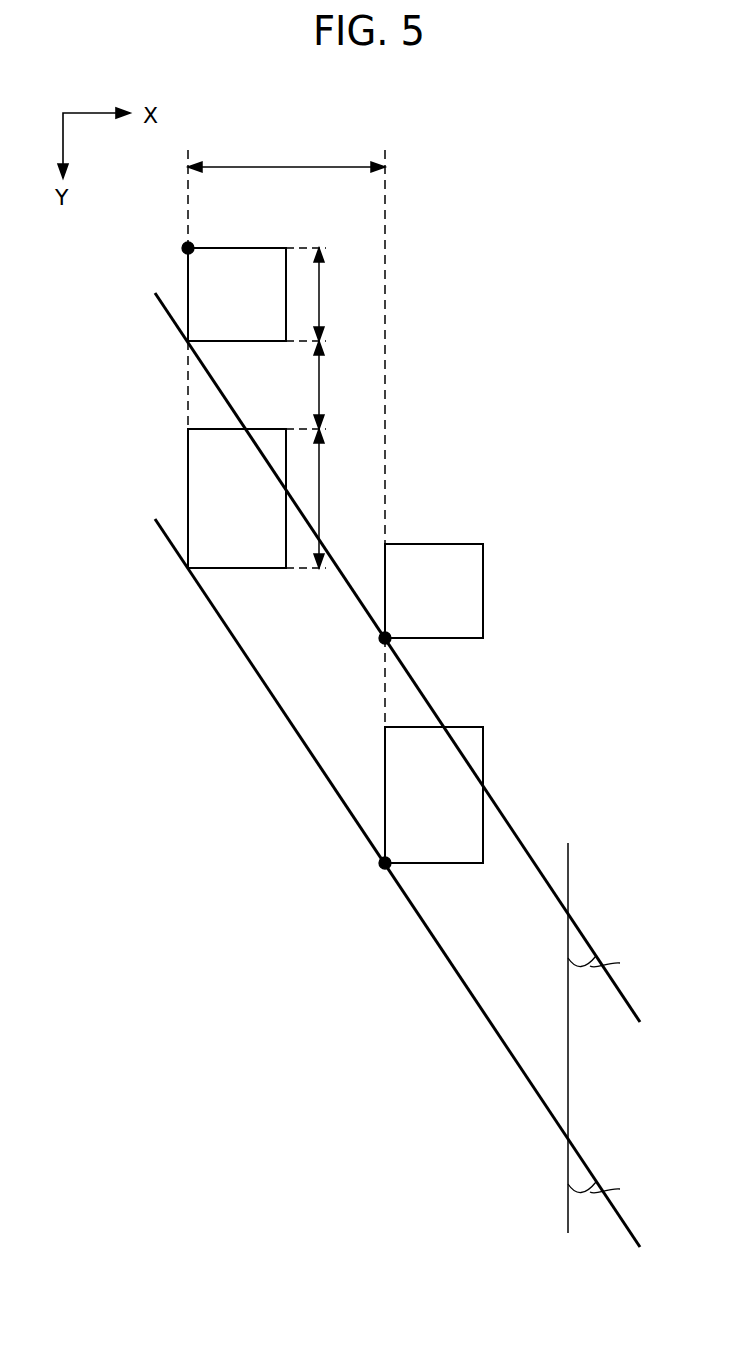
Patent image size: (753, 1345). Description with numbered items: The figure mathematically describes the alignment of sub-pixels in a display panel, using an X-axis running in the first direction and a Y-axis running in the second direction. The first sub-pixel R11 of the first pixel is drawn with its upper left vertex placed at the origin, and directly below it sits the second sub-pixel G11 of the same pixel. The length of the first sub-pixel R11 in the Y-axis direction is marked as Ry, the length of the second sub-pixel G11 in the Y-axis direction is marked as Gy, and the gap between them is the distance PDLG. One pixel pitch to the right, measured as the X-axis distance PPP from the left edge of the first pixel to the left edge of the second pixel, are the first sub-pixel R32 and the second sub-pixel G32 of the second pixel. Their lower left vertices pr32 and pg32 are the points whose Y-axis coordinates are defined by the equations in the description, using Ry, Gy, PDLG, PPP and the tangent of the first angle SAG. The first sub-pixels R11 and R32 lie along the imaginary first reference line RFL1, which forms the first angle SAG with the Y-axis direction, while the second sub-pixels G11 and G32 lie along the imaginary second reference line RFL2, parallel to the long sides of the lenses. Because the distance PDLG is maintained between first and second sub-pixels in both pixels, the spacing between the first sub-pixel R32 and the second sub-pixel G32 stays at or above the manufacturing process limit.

The first sub-pixel R11 is at (237, 294).
The second sub-pixel G11 is at (237, 498).
The first sub-pixel R32 is at (434, 591).
The second sub-pixel G32 is at (434, 795).
The lower left vertex pr32 is at (377, 648).
The lower left vertex pg32 is at (377, 873).
The first reference line RFL1 is at (580, 930).
The second reference line RFL2 is at (580, 1157).
The first angle SAG is at (615, 1077).
The pitch of one pixel PPP is at (286, 157).
The length of the first sub-pixel in the Y-axis direction Ry is at (332, 294).
The length of the second sub-pixel in the Y-axis direction Gy is at (332, 498).
The distance between the first sub-pixel and the second sub-pixel PDLG is at (344, 385).